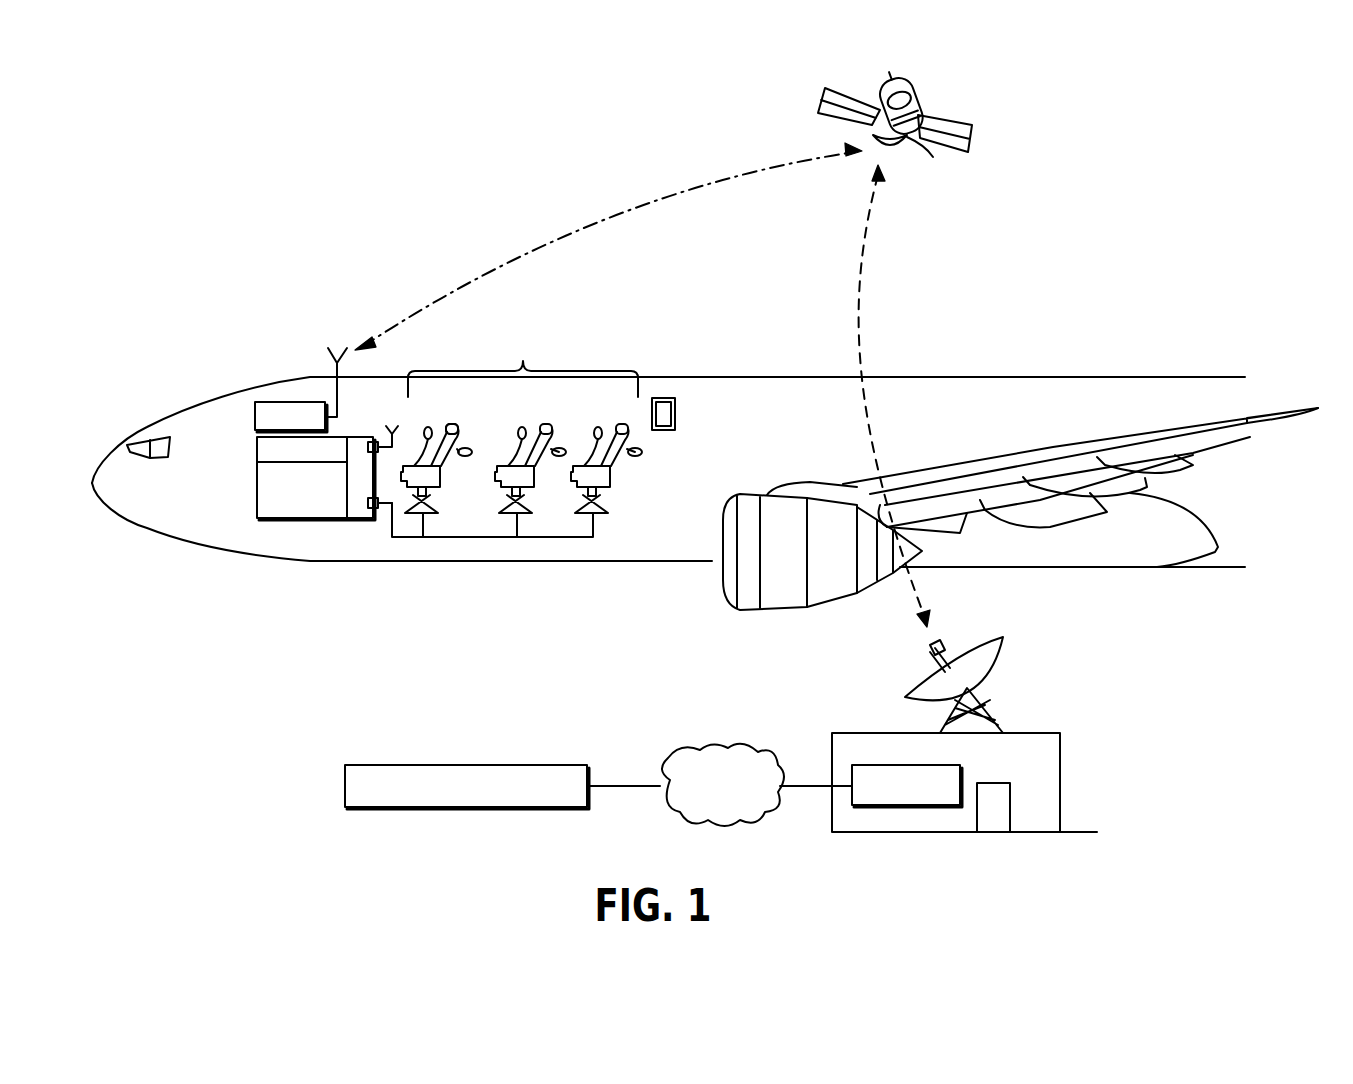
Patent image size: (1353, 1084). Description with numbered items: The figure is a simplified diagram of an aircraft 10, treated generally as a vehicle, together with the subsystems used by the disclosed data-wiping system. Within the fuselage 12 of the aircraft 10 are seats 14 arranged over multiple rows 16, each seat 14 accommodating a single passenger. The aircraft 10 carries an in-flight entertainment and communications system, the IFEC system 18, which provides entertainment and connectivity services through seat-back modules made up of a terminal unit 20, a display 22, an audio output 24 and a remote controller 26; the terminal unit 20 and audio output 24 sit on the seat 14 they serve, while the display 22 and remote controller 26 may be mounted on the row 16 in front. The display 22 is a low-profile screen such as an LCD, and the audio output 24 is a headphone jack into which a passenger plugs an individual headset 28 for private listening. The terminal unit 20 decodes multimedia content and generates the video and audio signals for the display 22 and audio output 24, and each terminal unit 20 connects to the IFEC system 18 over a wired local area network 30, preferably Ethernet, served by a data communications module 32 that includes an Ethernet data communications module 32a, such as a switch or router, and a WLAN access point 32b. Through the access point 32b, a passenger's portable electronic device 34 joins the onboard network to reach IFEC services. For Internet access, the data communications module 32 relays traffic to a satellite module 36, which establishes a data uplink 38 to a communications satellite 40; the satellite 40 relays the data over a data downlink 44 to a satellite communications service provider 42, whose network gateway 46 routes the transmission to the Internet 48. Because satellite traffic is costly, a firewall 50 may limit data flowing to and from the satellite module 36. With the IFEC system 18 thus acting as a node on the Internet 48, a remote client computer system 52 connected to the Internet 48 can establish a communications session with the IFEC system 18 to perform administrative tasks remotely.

The aircraft 10 is at (608, 648).
The fuselage 12 is at (962, 377).
The seat 14 is at (537, 482).
The row 16 is at (523, 358).
The in-flight entertainment and communications (IFEC) system 18 is at (288, 520).
The terminal unit 20 is at (495, 505).
The display 22 is at (459, 437).
The audio output 24 is at (503, 462).
The remote controller 26 is at (465, 457).
The headset 28 is at (530, 437).
The wired local area network 30 is at (452, 537).
The data communications module 32 is at (353, 437).
The Ethernet data communications module 32a is at (378, 509).
The WLAN access point 32b is at (380, 443).
The portable electronic device (PED) 34 is at (676, 407).
The satellite module 36 is at (280, 402).
The data uplink 38 is at (569, 229).
The communications satellite 40 is at (895, 121).
The satellite communications service provider 42 is at (852, 733).
The data downlink 44 is at (862, 271).
The network gateway 46 is at (893, 805).
The Internet 48 is at (710, 745).
The firewall 50 is at (257, 449).
The remote client computer system 52 is at (458, 765).